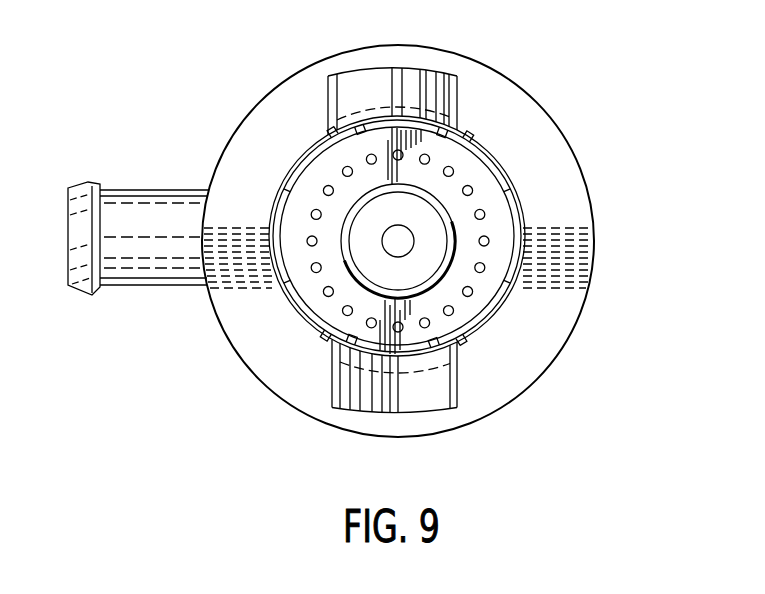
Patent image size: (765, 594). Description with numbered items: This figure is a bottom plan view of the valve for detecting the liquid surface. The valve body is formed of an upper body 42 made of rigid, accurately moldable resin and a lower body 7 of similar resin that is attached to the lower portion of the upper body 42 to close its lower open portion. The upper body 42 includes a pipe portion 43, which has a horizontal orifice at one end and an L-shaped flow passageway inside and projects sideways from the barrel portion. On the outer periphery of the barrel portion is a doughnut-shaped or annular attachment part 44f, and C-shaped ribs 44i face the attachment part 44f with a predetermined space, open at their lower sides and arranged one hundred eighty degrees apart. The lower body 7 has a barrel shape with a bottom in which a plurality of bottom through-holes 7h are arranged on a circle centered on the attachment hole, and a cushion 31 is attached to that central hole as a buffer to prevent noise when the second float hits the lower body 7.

The upper body 42 is at (216, 122).
The pipe portion 43 is at (143, 217).
The attachment part 44f is at (547, 136).
The C-shaped ribs 44i is at (407, 77).
The lower body 7 is at (481, 290).
The bottom through-holes 7h is at (470, 188).
The cushion 31 is at (410, 241).